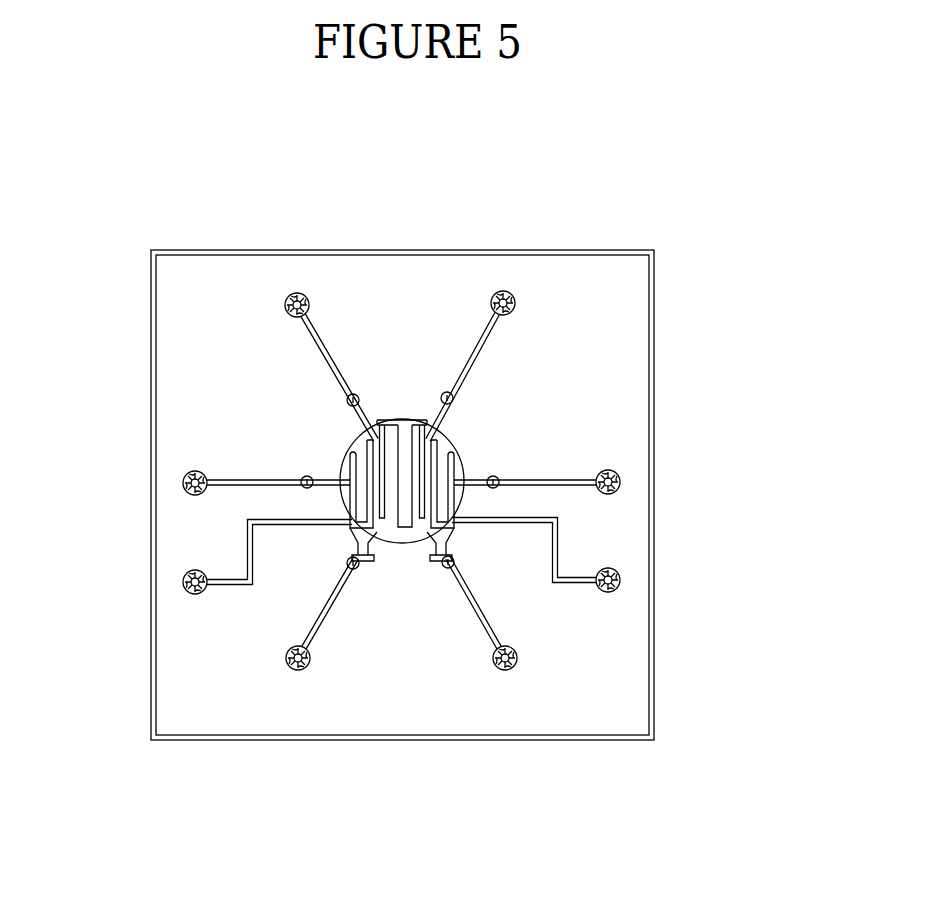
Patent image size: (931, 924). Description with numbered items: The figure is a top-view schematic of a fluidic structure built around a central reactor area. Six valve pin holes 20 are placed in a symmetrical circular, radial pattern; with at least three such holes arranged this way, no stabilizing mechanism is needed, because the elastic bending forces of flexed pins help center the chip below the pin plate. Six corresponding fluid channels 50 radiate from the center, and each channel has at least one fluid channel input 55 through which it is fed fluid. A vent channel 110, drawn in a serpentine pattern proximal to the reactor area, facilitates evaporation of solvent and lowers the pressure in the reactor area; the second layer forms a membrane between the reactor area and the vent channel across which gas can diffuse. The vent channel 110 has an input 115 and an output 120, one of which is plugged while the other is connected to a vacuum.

The valve pin hole 20 is at (402, 512).
The fluid channel 50 is at (478, 355).
The fluid channel input 55 is at (620, 482).
The vent channel 110 is at (406, 530).
The input 115 is at (183, 583).
The output 120 is at (620, 582).